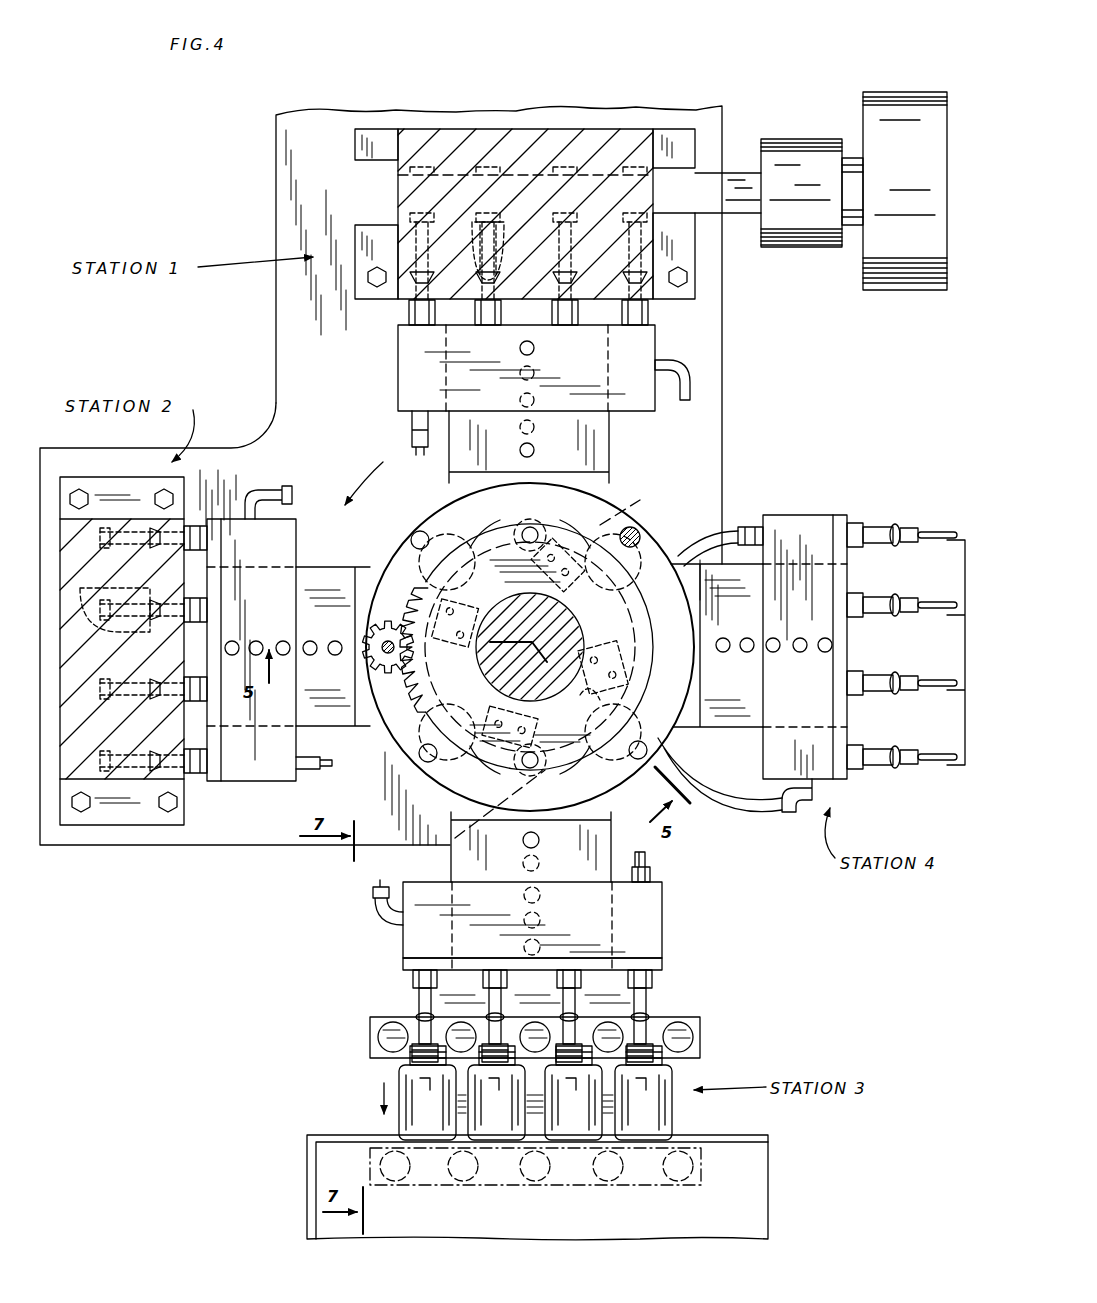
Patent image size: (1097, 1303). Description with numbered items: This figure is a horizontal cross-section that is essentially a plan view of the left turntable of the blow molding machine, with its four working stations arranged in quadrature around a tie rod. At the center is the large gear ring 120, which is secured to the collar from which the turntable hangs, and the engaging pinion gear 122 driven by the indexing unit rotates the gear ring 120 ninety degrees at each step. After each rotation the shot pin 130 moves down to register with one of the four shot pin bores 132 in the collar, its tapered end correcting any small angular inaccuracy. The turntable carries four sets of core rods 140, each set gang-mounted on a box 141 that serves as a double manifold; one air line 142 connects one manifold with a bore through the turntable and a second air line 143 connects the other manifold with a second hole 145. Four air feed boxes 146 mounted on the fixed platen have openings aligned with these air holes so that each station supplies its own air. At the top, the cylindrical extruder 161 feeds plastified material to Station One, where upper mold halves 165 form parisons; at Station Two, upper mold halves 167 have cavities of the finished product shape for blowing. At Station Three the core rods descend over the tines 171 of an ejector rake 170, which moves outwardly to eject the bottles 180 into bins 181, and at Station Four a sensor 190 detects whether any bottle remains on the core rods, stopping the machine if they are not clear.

The gear ring 120 is at (397, 578).
The pinion gear 122 is at (388, 662).
The shot pin 130 is at (637, 527).
The shot pin bores 132 is at (416, 533).
The core rods 140 is at (940, 600).
The box 141 is at (793, 515).
The air line 142 is at (306, 772).
The second air line 143 is at (766, 810).
The second hole 145 is at (600, 690).
The air feed boxes 146 is at (528, 575).
The cylindrical extruder 161 is at (906, 290).
The upper mold halves 165 is at (398, 160).
The upper mold halves 167 is at (95, 772).
The ejector rake 170 is at (370, 1026).
The tines 171 is at (547, 1001).
The bottles 180 is at (399, 1124).
The bins 181 is at (326, 1152).
The sensor 190 is at (960, 536).